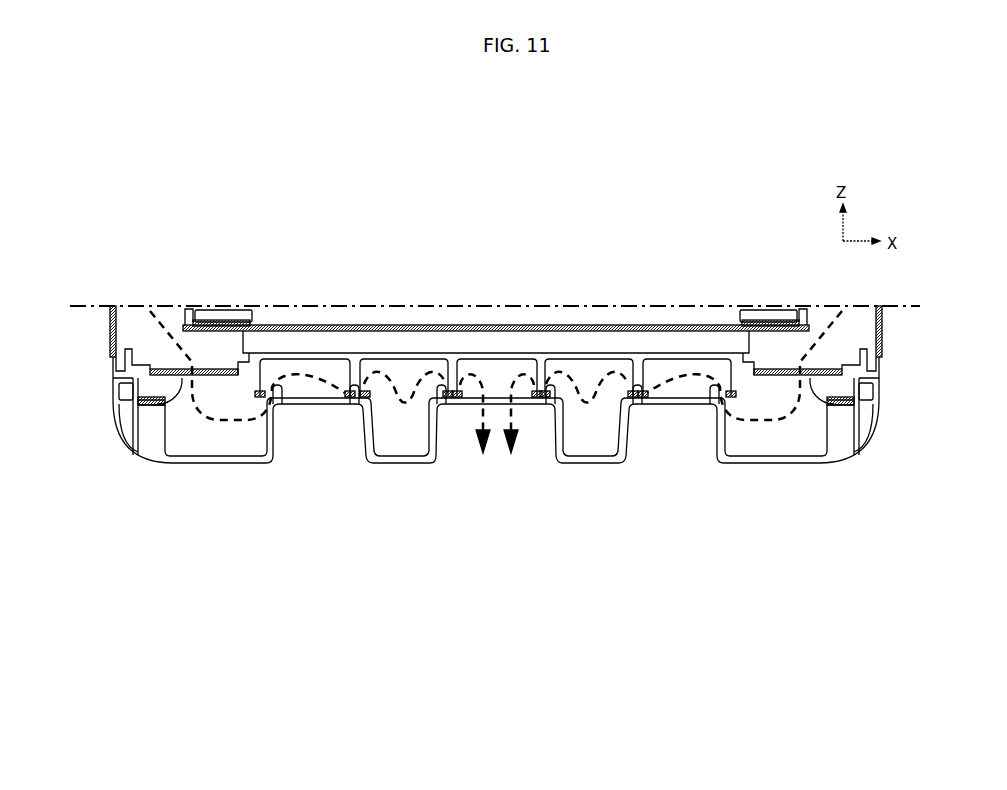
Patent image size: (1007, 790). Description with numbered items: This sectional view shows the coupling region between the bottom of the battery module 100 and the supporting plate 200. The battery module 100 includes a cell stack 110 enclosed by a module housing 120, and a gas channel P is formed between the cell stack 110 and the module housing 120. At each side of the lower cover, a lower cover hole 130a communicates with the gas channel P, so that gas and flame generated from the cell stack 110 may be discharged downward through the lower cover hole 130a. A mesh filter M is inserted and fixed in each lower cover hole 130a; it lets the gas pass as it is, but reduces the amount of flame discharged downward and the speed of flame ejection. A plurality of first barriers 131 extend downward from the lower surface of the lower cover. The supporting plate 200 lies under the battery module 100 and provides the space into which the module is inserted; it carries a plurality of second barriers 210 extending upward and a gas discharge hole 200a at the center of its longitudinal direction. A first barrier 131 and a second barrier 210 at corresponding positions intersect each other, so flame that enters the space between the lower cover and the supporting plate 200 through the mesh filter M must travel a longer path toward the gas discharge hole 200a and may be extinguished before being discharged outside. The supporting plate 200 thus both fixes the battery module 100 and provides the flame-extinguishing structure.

The battery module 100 is at (912, 356).
The cell stack 110 is at (640, 314).
The module housing 120 is at (112, 320).
The lower cover hole 130a is at (213, 375).
The first barrier 131 is at (262, 382).
The supporting plate 200 is at (215, 464).
The gas discharge hole 200a is at (497, 400).
The second barrier 210 is at (360, 407).
The mesh filter M is at (167, 405).
The gas channel P is at (854, 321).